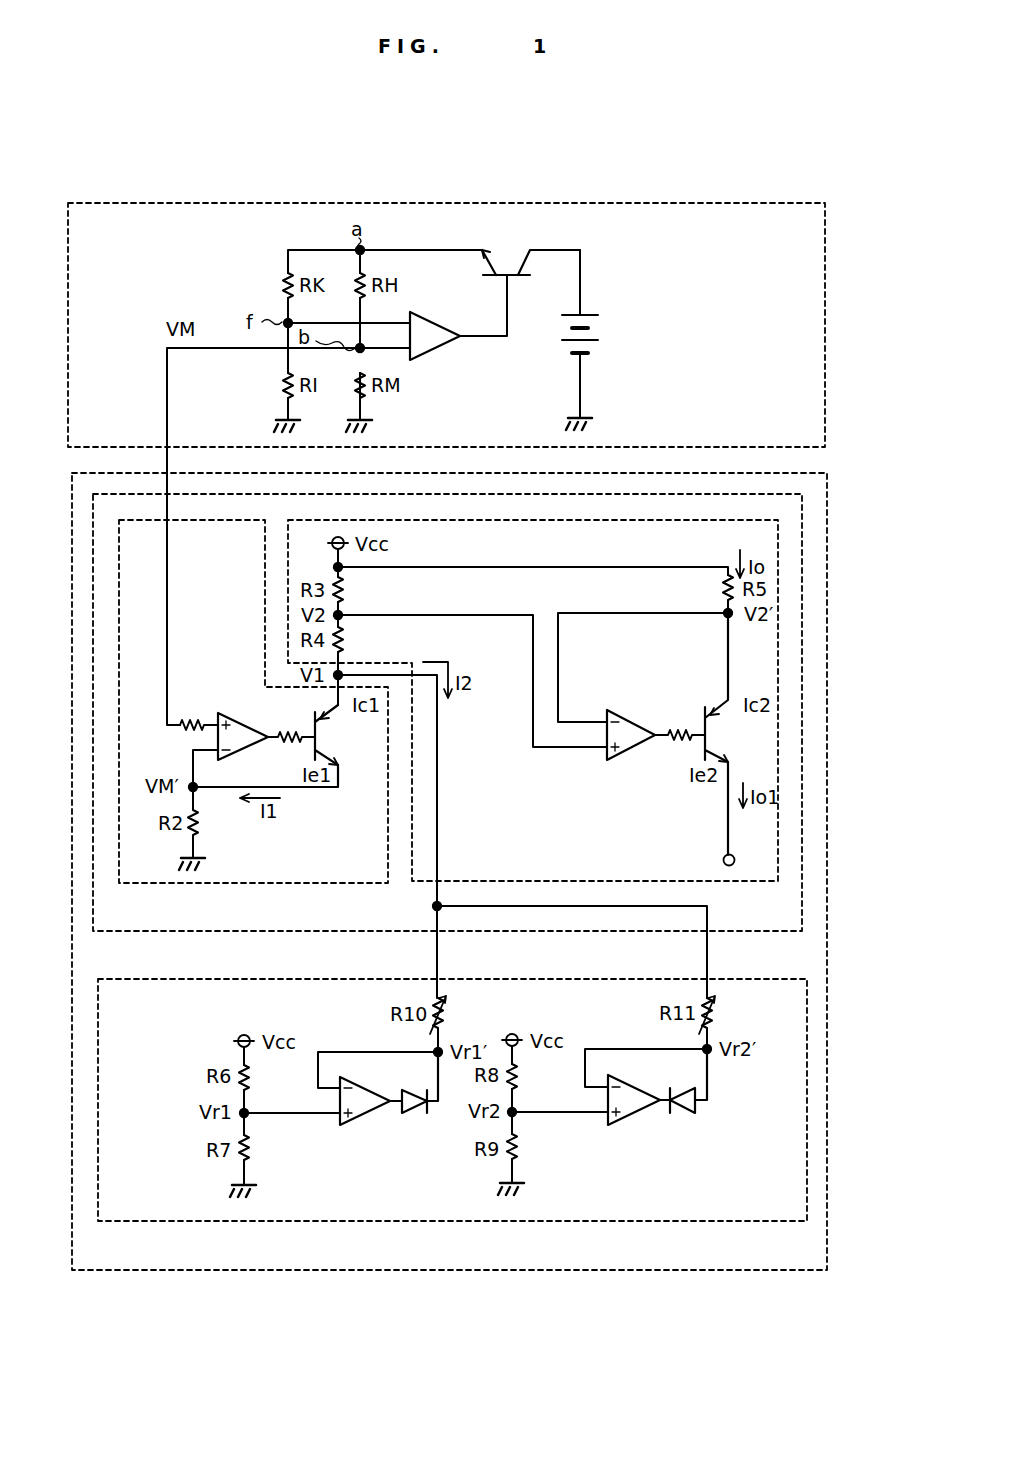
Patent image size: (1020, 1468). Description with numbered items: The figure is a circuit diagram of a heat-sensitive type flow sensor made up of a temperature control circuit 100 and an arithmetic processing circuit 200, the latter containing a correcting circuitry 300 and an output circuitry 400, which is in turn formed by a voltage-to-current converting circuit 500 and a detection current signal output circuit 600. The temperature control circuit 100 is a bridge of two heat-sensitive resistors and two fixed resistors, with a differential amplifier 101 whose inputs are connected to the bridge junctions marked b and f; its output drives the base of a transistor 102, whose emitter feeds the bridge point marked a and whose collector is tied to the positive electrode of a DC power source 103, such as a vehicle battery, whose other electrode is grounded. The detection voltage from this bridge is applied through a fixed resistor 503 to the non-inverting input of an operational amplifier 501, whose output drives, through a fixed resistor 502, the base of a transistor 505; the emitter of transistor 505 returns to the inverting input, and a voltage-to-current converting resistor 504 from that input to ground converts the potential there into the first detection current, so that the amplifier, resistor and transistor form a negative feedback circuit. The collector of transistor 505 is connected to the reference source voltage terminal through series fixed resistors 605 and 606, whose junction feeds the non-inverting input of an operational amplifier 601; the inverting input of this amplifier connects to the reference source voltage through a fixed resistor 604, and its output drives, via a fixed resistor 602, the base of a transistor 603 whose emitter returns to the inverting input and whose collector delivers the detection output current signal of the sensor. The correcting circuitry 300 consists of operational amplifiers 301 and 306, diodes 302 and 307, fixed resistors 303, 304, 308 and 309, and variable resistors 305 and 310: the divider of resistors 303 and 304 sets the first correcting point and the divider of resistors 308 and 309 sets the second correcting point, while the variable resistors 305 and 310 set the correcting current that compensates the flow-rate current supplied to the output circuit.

The temperature control circuit 100 is at (654, 206).
The differential amplifier 101 is at (429, 321).
The transistor 102 is at (505, 257).
The DC power source 103 is at (600, 333).
The arithmetic processing circuit 200 is at (757, 1270).
The correcting circuitry 300 is at (757, 1221).
The operational amplifier 301 is at (365, 1089).
The diode 302 is at (416, 1113).
The fixed resistor 303 is at (249, 1078).
The fixed resistor 304 is at (249, 1152).
The variable resistor 305 is at (443, 1013).
The operational amplifier 306 is at (635, 1087).
The diode 307 is at (684, 1113).
The fixed resistor 308 is at (517, 1077).
The fixed resistor 309 is at (517, 1151).
The variable resistor 310 is at (712, 1013).
The output circuitry 400 is at (755, 931).
The voltage-to-current converting circuit 500 is at (290, 883).
The operational amplifier 501 is at (241, 729).
The fixed resistor 502 is at (289, 733).
The fixed resistor 503 is at (195, 722).
The voltage-to-current converting resistor 504 is at (198, 825).
The transistor 505 is at (325, 737).
The detection current signal output circuit 600 is at (755, 881).
The operational amplifier 601 is at (630, 724).
The fixed resistor 602 is at (679, 732).
The transistor 603 is at (714, 737).
The fixed resistor 604 is at (724, 590).
The fixed resistor 605 is at (343, 590).
The fixed resistor 606 is at (343, 640).